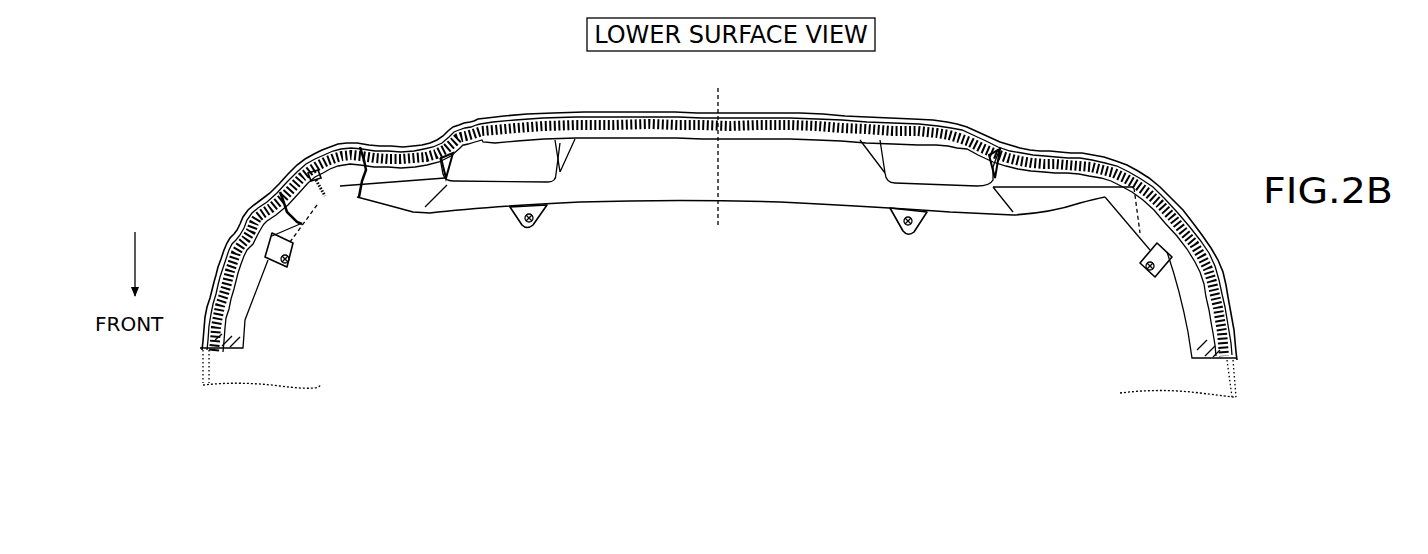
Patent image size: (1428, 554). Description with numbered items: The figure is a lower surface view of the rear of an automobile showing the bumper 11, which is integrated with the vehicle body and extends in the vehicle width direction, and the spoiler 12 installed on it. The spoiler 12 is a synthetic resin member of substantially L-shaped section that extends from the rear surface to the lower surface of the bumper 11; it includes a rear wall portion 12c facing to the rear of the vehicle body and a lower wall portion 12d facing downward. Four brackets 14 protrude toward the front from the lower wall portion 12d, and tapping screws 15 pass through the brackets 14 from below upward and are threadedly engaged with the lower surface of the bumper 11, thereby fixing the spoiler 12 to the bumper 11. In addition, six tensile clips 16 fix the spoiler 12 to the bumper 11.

The bumper 11 is at (1242, 384).
The spoiler 12 is at (813, 107).
The rear wall portion 12c is at (291, 173).
The lower wall portion 12d is at (669, 202).
The bracket 14 is at (272, 237).
The tapping screw 15 is at (288, 272).
The tensile clip 16 is at (342, 197).